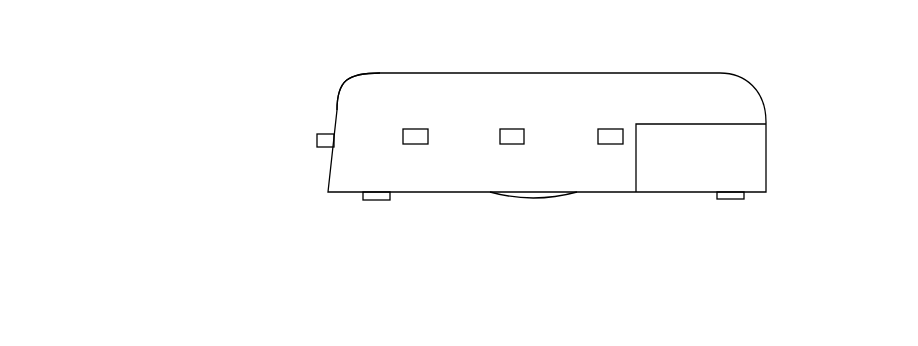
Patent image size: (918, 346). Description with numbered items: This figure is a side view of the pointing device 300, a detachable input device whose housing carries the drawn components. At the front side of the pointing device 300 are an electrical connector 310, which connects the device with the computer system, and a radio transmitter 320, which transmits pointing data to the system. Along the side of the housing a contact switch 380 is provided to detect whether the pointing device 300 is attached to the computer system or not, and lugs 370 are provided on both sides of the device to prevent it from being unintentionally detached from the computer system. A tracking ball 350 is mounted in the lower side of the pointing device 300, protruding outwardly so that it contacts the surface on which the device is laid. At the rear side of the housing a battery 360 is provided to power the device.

The pointing device 300 is at (822, 43).
The electrical connector 310 is at (317, 140).
The radio transmitter 320 is at (341, 90).
The tracking ball 350 is at (532, 195).
The battery 360 is at (755, 158).
The lugs 370 is at (615, 131).
The contact switch 380 is at (415, 131).